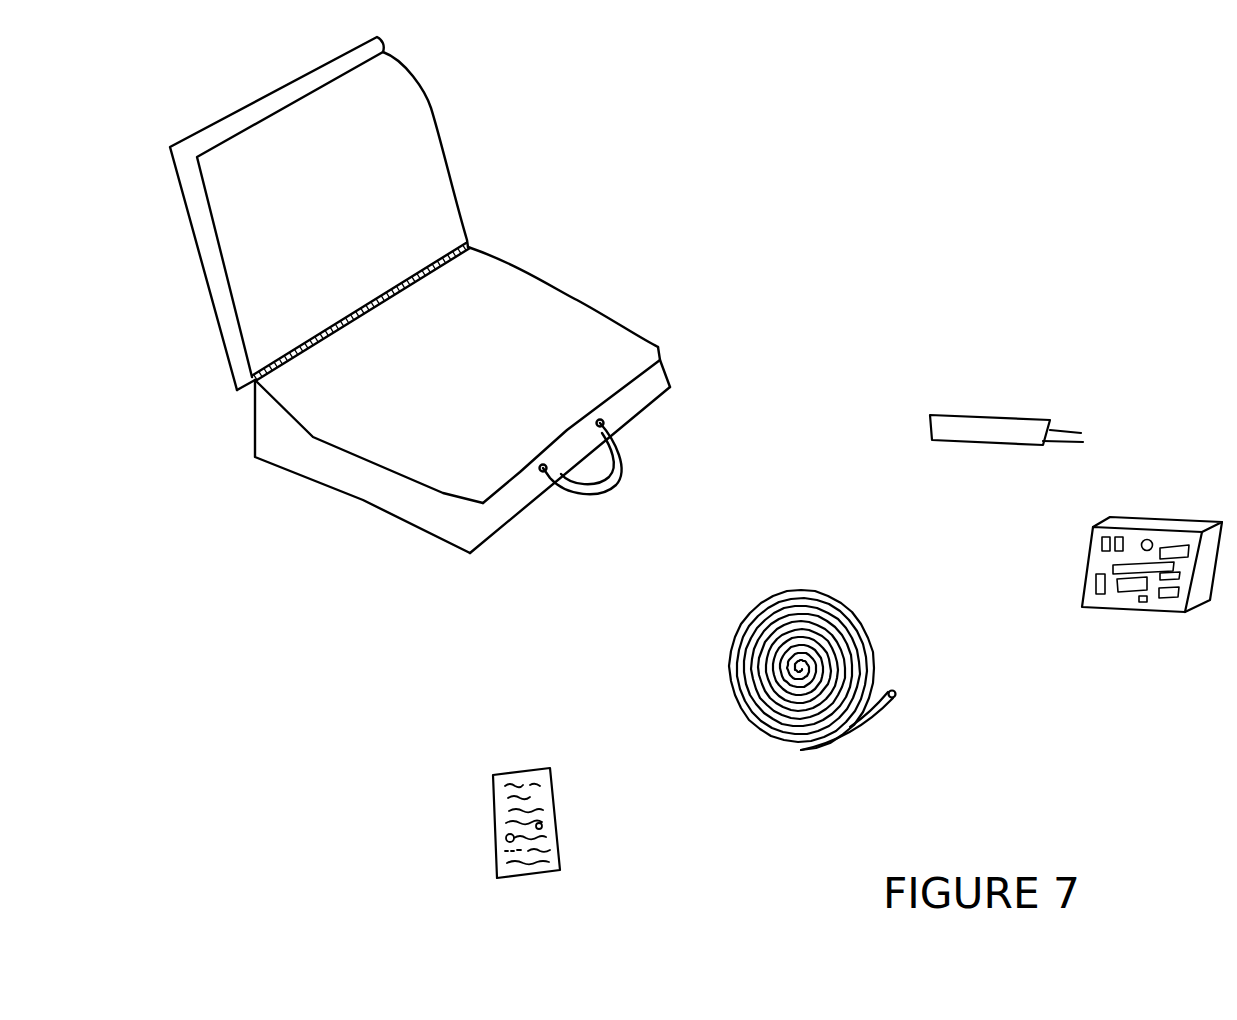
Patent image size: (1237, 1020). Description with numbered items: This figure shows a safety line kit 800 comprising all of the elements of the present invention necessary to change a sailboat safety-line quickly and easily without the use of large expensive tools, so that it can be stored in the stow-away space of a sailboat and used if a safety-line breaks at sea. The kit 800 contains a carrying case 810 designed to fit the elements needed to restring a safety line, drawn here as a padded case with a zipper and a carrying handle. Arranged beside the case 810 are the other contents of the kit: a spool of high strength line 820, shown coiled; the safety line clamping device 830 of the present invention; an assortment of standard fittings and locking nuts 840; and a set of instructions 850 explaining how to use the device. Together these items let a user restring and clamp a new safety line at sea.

The safety line kit 800 is at (800, 185).
The case 810 is at (393, 503).
The line 820 is at (852, 590).
The safety line clamping device 830 is at (990, 420).
The assortment of standard fittings 840 is at (1155, 613).
The instructions 850 is at (555, 812).